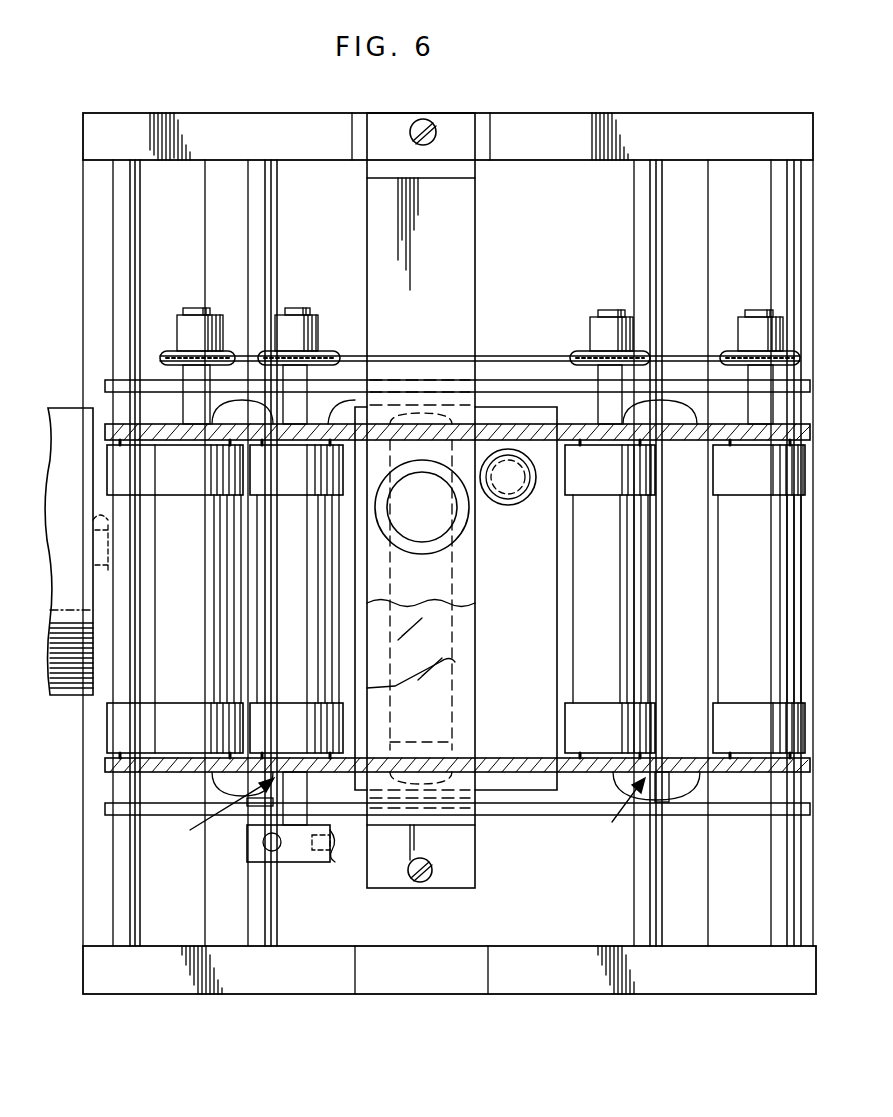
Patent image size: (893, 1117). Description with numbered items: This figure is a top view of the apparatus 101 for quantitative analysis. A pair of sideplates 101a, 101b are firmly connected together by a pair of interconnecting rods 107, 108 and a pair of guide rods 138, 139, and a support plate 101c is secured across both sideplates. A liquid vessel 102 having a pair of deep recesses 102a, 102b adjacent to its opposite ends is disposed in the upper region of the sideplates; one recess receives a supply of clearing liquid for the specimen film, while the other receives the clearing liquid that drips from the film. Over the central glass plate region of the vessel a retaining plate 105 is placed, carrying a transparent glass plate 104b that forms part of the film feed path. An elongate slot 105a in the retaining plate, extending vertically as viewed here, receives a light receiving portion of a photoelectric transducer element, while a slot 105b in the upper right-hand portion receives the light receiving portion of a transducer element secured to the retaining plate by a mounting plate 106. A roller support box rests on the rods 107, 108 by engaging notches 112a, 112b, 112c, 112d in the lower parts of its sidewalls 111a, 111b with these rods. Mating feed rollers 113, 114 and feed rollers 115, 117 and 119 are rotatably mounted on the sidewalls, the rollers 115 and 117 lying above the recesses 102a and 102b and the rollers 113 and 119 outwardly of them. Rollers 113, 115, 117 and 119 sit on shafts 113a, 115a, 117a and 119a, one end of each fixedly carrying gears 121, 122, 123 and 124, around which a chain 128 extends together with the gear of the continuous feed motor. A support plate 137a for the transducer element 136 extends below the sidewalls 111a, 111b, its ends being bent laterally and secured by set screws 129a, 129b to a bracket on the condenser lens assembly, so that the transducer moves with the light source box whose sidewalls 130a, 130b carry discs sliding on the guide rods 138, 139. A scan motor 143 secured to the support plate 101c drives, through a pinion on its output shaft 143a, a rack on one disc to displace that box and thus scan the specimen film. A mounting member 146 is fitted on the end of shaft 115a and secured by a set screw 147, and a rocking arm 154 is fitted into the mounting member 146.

The apparatus for quantitative analysis 101 is at (282, 1002).
The sideplate 101a is at (656, 113).
The sideplate 101b is at (555, 985).
The support plate 101c is at (128, 686).
The liquid vessel 102 is at (575, 800).
The deep recess 102a is at (211, 814).
The deep recess 102b is at (611, 814).
The transparent glass plate 104b is at (445, 622).
The retaining plate 105 is at (540, 792).
The elongate slot 105a is at (452, 672).
The slot 105b is at (522, 500).
The mounting plate 106 is at (537, 472).
The interconnecting rod 107 is at (141, 893).
The interconnecting rod 108 is at (783, 876).
The sidewall 111a is at (106, 440).
The sidewall 111b is at (108, 770).
The notch 112a is at (178, 405).
The notch 112b is at (785, 440).
The notch 112c is at (140, 772).
The notch 112d is at (778, 772).
The feed roller 113 is at (165, 698).
The shaft 113a is at (155, 350).
The feed roller 114 is at (108, 545).
The feed roller 115 is at (265, 584).
The shaft 115a is at (342, 355).
The feed roller 117 is at (575, 576).
The shaft 117a is at (598, 368).
The feed roller 119 is at (730, 604).
The shaft 119a is at (748, 372).
The gear 121 is at (232, 350).
The gear 122 is at (290, 350).
The gear 123 is at (590, 350).
The gear 124 is at (728, 350).
The chain 128 is at (428, 352).
The set screw 129a is at (428, 118).
The set screw 129b is at (428, 878).
The sidewall 130a is at (95, 395).
The sidewall 130b is at (108, 810).
The transducer element 136 is at (448, 520).
The support plate 137a is at (470, 710).
The guide rod 138 is at (295, 908).
The guide rod 139 is at (645, 905).
The scan motor 143 is at (93, 596).
The output shaft 143a is at (81, 523).
The mounting member 146 is at (250, 848).
The set screw 147 is at (332, 858).
The rocking arm 154 is at (278, 850).